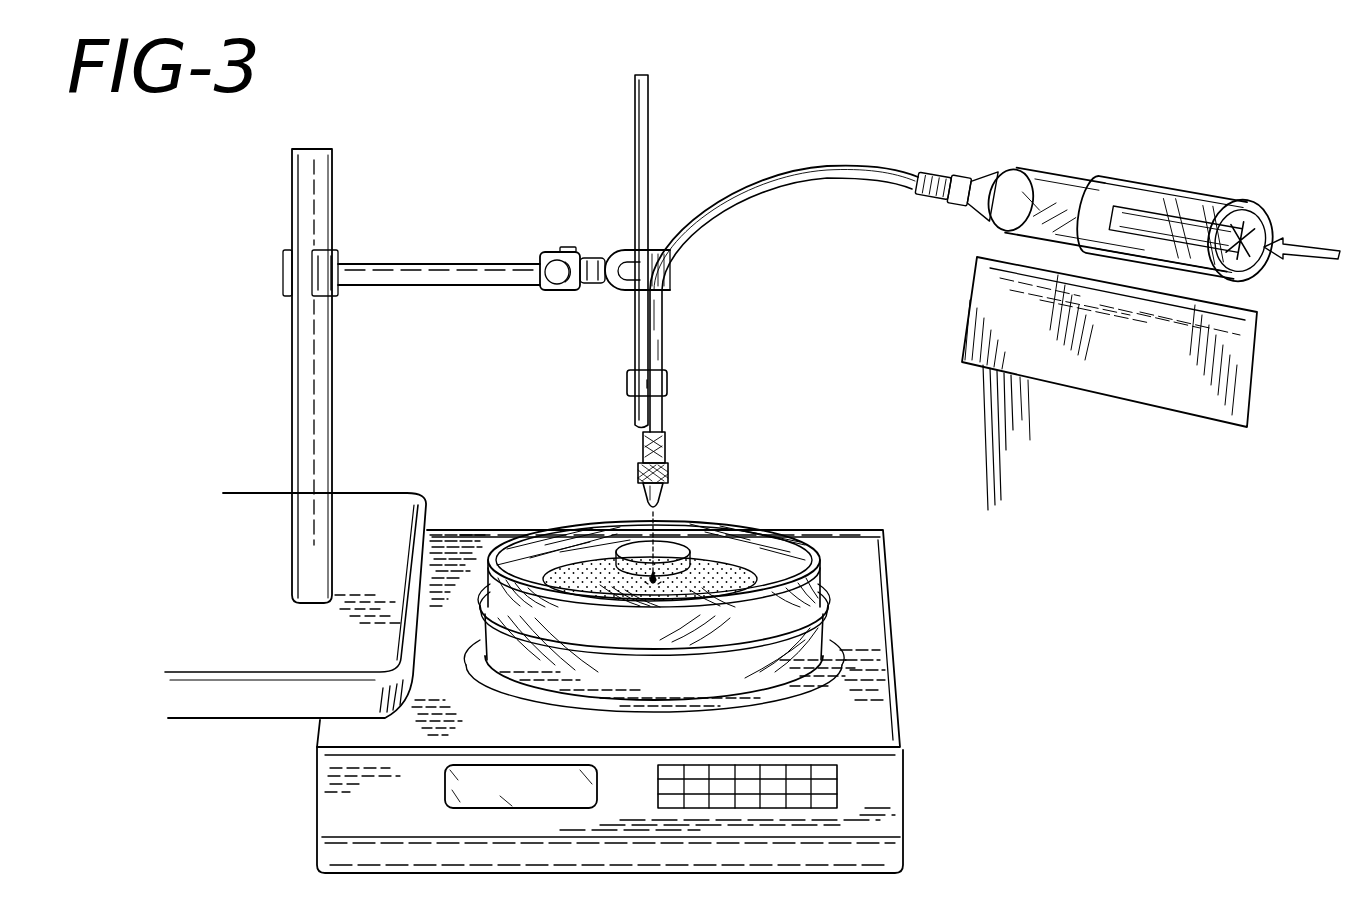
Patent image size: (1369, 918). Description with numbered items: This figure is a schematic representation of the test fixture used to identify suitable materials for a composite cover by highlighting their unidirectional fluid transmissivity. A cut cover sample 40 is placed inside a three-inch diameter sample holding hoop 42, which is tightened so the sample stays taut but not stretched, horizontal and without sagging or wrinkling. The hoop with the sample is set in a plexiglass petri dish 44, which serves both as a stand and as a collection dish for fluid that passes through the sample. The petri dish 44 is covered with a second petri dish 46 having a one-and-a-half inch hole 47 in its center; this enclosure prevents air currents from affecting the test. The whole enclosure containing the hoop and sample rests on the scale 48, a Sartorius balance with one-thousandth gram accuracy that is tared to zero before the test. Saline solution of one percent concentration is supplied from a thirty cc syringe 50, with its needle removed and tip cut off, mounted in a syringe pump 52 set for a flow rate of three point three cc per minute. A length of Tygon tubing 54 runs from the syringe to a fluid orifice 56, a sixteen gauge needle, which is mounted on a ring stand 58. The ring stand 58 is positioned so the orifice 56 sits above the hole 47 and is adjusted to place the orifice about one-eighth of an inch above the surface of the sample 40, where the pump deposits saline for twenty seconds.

The sample 40 is at (642, 548).
The sample holding hoop 42 is at (738, 568).
The petri dish 44 is at (823, 668).
The second petri dish 46 is at (822, 562).
The hole 47 is at (650, 556).
The scale 48 is at (874, 788).
The syringe 50 is at (1046, 152).
The syringe pump 52 is at (995, 303).
The Tygon tubing 54 is at (800, 167).
The fluid orifice 56 is at (668, 508).
The ring stand 58 is at (246, 268).